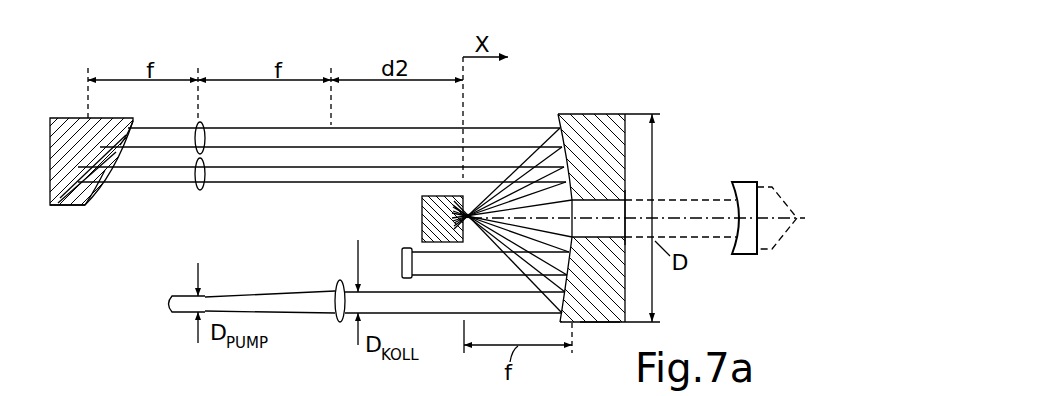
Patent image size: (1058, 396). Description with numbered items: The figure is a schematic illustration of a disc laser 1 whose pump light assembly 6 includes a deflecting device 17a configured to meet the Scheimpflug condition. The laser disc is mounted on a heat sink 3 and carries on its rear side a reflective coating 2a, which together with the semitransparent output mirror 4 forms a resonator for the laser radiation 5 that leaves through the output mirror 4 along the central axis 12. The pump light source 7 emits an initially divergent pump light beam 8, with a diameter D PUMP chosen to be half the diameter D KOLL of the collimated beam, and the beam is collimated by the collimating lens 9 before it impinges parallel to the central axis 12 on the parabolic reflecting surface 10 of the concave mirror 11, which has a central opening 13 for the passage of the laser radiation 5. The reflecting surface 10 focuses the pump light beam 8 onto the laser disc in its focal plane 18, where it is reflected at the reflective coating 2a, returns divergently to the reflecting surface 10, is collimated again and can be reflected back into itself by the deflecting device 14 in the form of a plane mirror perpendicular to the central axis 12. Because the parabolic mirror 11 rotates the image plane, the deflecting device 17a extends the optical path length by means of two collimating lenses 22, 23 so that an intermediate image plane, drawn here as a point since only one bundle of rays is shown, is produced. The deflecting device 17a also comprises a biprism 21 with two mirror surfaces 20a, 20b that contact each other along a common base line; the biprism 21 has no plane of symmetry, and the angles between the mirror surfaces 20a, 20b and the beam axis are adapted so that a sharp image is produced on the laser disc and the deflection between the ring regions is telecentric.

The disc laser 1 is at (732, 128).
The reflective coating 2a is at (470, 228).
The heat sink 3 is at (420, 218).
The semitransparent output mirror 4 is at (746, 186).
The laser radiation 5 is at (712, 198).
The pump light assembly 6 is at (292, 250).
The pump light source 7 is at (172, 297).
The pump light beam 8 is at (250, 294).
The collimating lens 9 is at (336, 285).
The reflecting surface 10 is at (560, 122).
The concave mirror 11 is at (600, 324).
The central axis 12 is at (708, 222).
The central opening 13 is at (632, 197).
The deflecting device 14 is at (400, 257).
The deflecting device 17a is at (60, 112).
The focal plane 18 is at (465, 118).
The mirror surface 20a is at (92, 200).
The mirror surface 20b is at (128, 120).
The biprism 21 is at (66, 206).
The collimating lens 22 is at (207, 125).
The collimating lens 23 is at (200, 192).